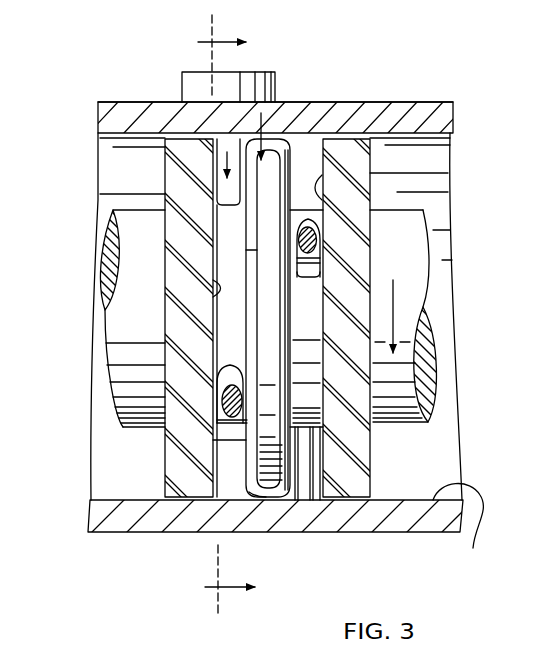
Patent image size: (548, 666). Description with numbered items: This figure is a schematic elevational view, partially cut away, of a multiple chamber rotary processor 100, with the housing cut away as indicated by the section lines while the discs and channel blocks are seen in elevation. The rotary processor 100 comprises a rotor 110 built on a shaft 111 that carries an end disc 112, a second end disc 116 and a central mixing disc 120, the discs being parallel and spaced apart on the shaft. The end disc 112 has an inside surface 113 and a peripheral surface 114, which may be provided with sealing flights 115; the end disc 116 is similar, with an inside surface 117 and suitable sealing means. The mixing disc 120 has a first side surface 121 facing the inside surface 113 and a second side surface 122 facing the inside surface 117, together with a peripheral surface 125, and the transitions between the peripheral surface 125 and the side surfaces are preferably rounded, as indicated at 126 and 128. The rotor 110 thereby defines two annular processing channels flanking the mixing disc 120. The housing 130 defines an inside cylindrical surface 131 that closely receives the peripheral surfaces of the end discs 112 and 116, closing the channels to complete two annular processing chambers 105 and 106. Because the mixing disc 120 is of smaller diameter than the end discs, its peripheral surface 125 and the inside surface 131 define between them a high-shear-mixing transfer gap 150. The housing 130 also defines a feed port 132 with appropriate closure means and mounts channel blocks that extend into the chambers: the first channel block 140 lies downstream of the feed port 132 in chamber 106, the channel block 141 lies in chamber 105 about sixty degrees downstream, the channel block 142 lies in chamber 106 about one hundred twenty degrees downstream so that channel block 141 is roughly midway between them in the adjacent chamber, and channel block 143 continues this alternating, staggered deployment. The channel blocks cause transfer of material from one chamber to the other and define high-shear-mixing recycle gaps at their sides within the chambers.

The multiple chamber rotary processor 100 is at (433, 55).
The annular processing chamber 105 is at (322, 103).
The annular processing chamber 106 is at (231, 481).
The rotor 110 is at (105, 383).
The shaft 111 is at (100, 294).
The end disc 112 is at (375, 165).
The inside surface 113 is at (400, 192).
The peripheral surface 114 is at (360, 257).
The sealing flights 115 is at (375, 455).
The second end disc 116 is at (165, 168).
The inside surface 117 is at (165, 329).
The central mixing disc 120 is at (305, 152).
The first side surface 121 is at (293, 322).
The second side surface 122 is at (245, 250).
The peripheral surface 125 is at (270, 445).
The rounded transition 126 is at (307, 500).
The rounded transition 128 is at (252, 497).
The housing 130 is at (120, 107).
The inside cylindrical surface 131 is at (468, 533).
The feed port 132 is at (250, 72).
The first channel block 140 is at (228, 145).
The channel block 141 is at (320, 232).
The channel block 142 is at (217, 420).
The channel block 143 is at (340, 510).
The high-shear-mixing transfer gap 150 is at (272, 178).